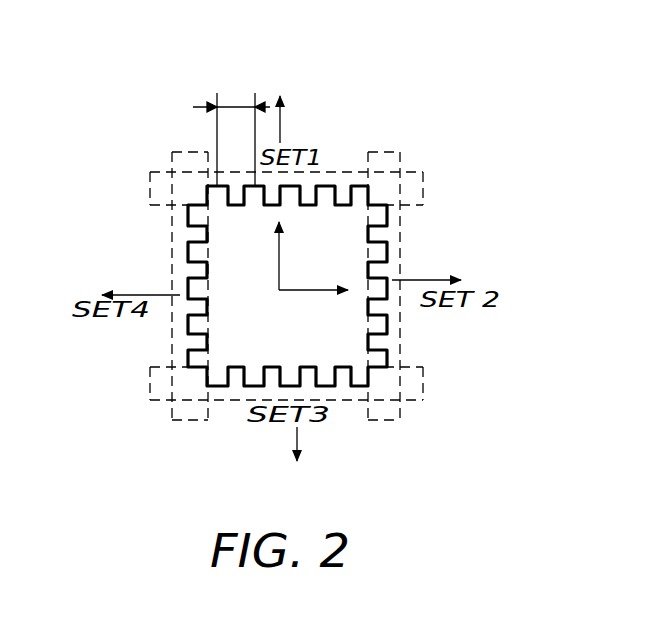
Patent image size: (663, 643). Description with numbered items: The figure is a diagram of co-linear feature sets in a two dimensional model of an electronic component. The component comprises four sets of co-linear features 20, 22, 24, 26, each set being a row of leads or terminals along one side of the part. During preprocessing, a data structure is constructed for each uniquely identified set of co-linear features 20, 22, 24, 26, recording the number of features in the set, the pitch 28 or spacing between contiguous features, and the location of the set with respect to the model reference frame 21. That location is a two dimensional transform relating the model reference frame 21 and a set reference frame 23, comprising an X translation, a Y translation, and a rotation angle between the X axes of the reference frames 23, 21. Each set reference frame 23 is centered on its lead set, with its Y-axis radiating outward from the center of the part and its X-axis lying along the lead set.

The set of co-linear features 20 is at (333, 170).
The model reference frame 21 is at (279, 294).
The set of co-linear features 22 is at (401, 243).
The set reference frame 23 is at (274, 190).
The set of co-linear features 24 is at (345, 403).
The set of co-linear features 26 is at (171, 233).
The pitch 28 is at (235, 107).